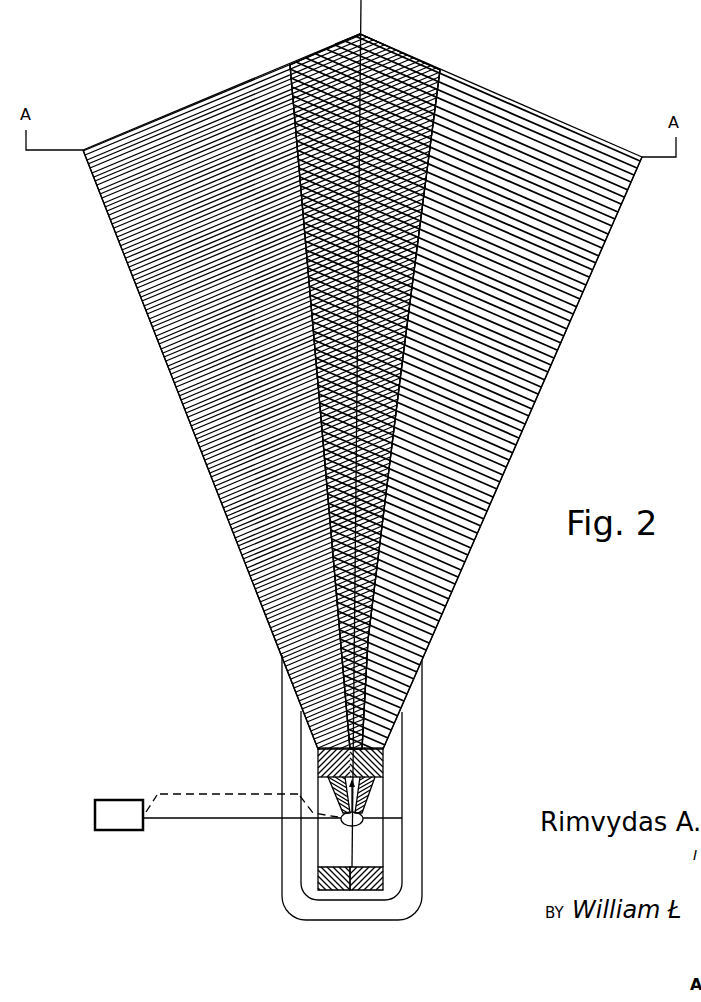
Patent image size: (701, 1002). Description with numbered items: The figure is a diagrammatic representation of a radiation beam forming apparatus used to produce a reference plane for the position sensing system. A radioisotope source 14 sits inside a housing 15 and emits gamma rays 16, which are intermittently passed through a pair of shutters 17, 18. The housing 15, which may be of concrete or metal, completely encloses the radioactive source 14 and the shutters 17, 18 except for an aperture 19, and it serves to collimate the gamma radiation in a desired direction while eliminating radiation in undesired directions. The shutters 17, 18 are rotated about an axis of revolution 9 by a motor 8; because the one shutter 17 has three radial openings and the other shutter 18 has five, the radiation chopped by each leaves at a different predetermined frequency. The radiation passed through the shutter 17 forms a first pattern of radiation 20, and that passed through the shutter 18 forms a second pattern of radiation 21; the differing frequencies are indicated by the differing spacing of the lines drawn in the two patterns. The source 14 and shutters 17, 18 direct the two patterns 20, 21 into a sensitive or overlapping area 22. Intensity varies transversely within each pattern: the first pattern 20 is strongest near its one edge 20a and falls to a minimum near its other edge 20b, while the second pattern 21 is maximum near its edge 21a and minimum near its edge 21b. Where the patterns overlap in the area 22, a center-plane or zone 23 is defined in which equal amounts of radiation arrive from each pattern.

The motor 8 is at (125, 826).
The axis of revolution 9 is at (223, 818).
The radioisotope source 14 is at (350, 826).
The housing 15 is at (282, 900).
The gamma rays 16 is at (327, 788).
The shutter 17 is at (335, 892).
The shutter 18 is at (372, 890).
The aperture 19 is at (423, 693).
The first pattern of radiation 20 is at (163, 112).
The edge of first radiation pattern 20a is at (133, 283).
The edge of first radiation pattern 20b is at (443, 113).
The second pattern of radiation 21 is at (613, 108).
The edge of second radiation pattern 21a is at (600, 257).
The edge of second radiation pattern 21b is at (290, 82).
The overlapping area 22 is at (416, 49).
The center-plane 23 is at (335, 45).